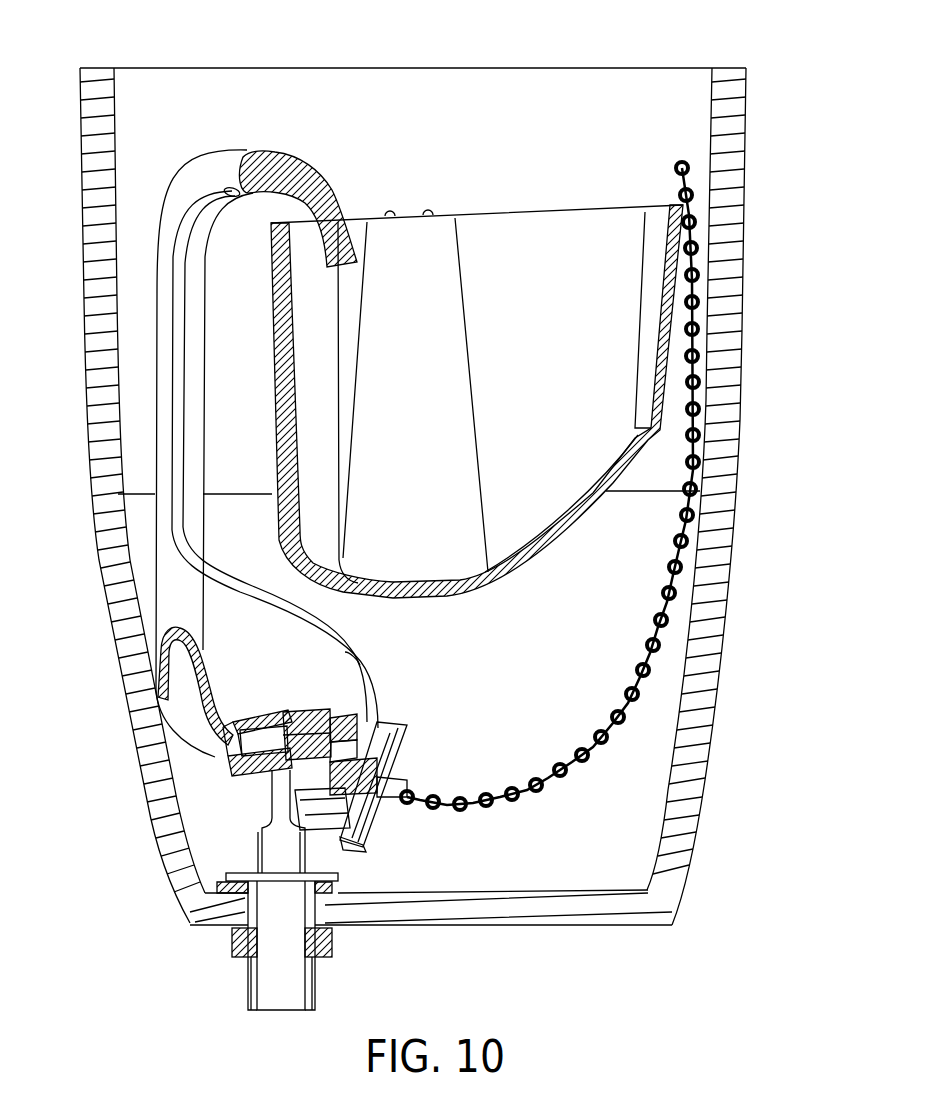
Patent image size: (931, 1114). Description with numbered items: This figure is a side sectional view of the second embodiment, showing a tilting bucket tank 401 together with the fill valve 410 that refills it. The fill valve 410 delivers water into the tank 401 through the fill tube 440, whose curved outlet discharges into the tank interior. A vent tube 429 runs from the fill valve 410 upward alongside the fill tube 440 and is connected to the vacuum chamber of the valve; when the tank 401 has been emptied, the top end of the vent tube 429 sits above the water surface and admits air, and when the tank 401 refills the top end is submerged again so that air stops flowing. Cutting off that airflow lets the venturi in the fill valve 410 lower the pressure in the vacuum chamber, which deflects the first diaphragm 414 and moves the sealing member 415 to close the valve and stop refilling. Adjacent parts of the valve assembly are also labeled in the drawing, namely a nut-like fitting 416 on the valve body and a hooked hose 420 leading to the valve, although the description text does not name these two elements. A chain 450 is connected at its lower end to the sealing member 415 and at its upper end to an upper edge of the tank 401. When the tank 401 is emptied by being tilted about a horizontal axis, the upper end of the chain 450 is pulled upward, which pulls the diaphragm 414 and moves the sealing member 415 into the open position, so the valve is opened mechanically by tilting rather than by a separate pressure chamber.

The tilting bucket tank 401 is at (552, 232).
The fill valve 410 is at (292, 834).
The first diaphragm 414 is at (400, 747).
The sealing member 415 is at (226, 757).
The valve nut 416 is at (296, 713).
The refill hose 420 is at (187, 690).
The vent tube 429 is at (190, 197).
The fill tube 440 is at (240, 168).
The chain 450 is at (690, 567).